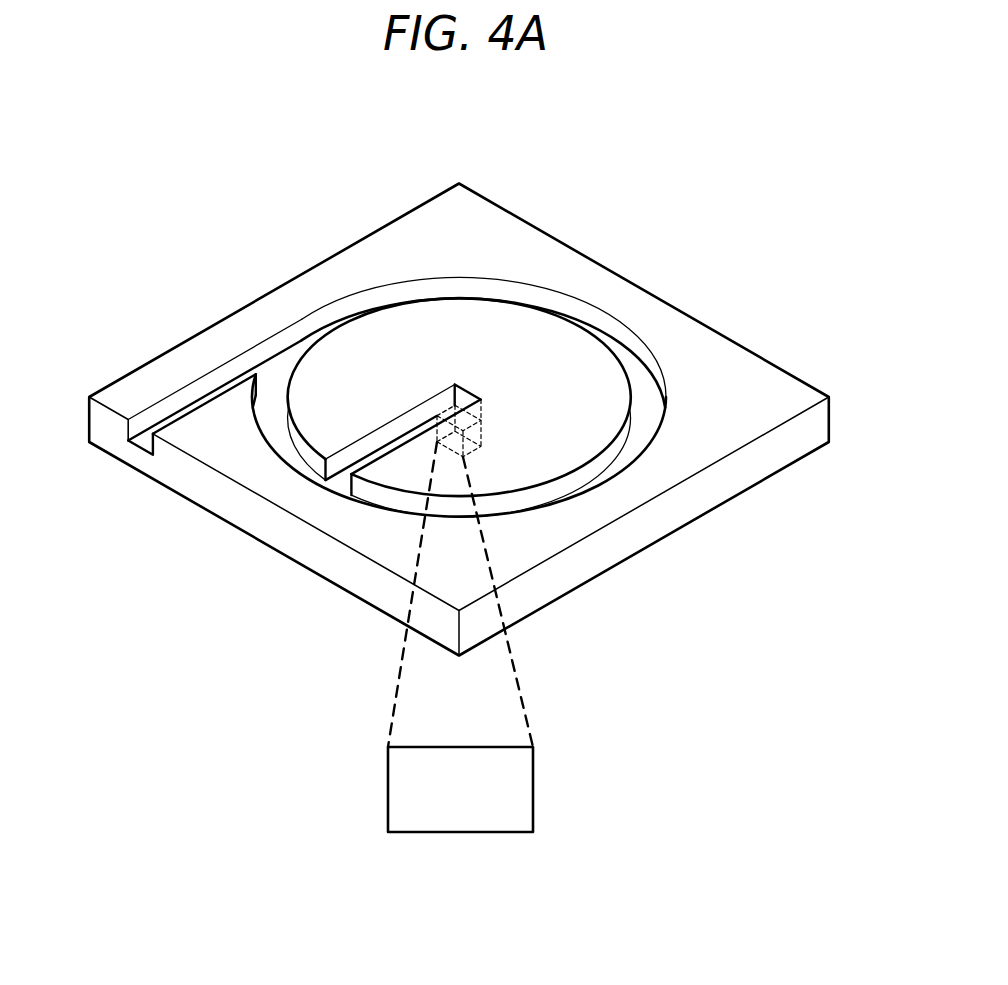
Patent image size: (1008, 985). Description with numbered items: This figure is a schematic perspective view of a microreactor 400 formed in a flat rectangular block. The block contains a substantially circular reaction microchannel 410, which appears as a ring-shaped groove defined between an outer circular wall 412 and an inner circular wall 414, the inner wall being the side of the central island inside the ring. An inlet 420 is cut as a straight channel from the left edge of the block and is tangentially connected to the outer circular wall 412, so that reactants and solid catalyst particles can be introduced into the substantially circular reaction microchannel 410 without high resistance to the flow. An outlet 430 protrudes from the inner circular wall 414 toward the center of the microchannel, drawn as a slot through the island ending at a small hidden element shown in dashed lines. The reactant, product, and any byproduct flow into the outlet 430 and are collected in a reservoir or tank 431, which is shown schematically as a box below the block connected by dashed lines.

The microreactor 400 is at (479, 147).
The substantially circular reaction microchannel 410 is at (644, 400).
The outer circular wall 412 is at (603, 327).
The inner circular wall 414 is at (588, 470).
The inlet 420 is at (148, 437).
The outlet 430 is at (483, 430).
The reservoir or tank 431 is at (522, 793).